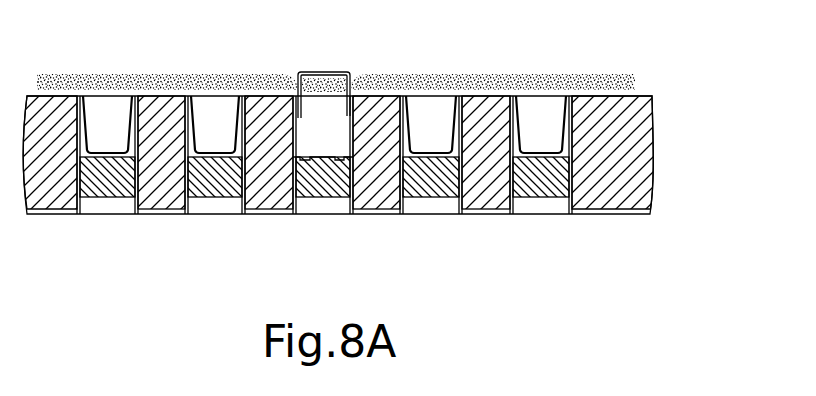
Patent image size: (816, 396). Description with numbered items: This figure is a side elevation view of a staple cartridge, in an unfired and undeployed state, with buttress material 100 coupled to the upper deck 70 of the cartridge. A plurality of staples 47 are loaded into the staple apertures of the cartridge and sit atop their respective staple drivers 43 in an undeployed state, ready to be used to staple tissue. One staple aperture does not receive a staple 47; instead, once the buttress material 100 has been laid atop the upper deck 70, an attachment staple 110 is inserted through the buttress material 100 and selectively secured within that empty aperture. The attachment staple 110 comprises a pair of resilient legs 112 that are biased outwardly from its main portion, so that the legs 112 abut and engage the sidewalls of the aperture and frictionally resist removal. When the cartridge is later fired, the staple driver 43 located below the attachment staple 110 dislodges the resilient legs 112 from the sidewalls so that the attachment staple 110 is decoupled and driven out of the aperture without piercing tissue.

The upper deck 70 is at (645, 97).
The staple 47 is at (132, 131).
The staple driver 43 is at (120, 197).
The buttress material 100 is at (548, 75).
The attachment staple 110 is at (326, 72).
The resilient legs 112 is at (341, 138).